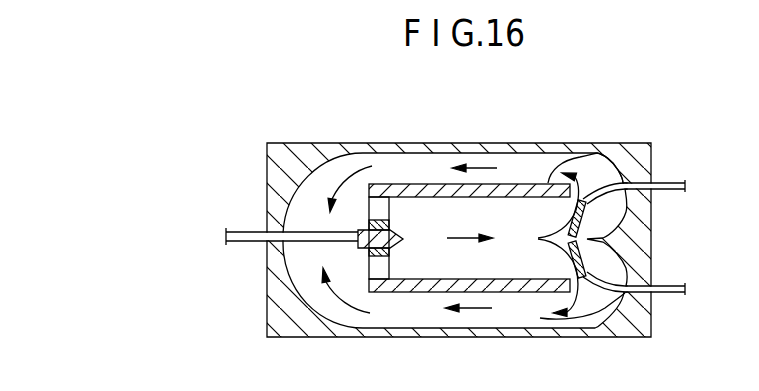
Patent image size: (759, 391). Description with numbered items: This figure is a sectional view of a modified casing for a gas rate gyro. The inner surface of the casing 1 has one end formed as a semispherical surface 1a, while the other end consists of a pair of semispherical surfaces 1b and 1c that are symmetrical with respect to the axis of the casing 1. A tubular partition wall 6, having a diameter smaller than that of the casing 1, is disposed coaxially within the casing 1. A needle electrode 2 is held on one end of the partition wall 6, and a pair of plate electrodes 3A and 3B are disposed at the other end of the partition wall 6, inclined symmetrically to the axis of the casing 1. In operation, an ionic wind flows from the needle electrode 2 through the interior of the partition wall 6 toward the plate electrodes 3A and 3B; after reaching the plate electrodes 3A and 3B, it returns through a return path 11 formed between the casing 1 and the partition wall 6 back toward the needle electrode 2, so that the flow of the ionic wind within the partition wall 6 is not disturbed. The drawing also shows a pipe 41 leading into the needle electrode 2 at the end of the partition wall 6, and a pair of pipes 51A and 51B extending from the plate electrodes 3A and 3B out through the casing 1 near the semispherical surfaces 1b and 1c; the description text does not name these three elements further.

The casing 1 is at (493, 148).
The return path 11 is at (440, 167).
The semispherical surface 1a is at (288, 262).
The semispherical surface 1b is at (628, 147).
The semispherical surface 1c is at (558, 316).
The needle electrode 2 is at (407, 221).
The supply pipe 41 is at (252, 210).
The plate electrode 3A is at (587, 218).
The plate electrode 3B is at (587, 267).
The outlet pipe 51A is at (667, 183).
The outlet pipe 51B is at (657, 294).
The tubular partition wall 6 is at (590, 153).